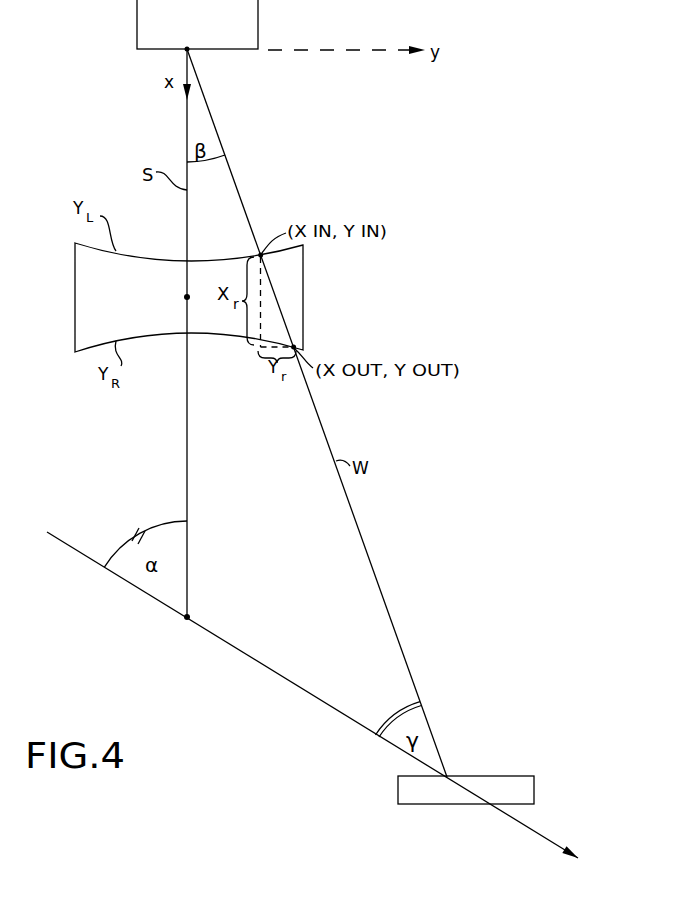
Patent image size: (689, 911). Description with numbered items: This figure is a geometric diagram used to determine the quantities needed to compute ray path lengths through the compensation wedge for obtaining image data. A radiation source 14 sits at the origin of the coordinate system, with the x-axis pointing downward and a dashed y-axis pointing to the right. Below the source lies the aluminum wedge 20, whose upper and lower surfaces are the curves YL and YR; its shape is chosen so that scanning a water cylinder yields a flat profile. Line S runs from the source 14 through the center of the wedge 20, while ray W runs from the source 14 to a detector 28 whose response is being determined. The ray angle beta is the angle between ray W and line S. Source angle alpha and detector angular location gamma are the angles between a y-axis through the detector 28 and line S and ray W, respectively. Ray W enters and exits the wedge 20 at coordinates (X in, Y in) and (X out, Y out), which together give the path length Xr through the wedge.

The radiation source 14 is at (258, 32).
The aluminum wedge 20 is at (75, 293).
The detector 28 is at (534, 790).